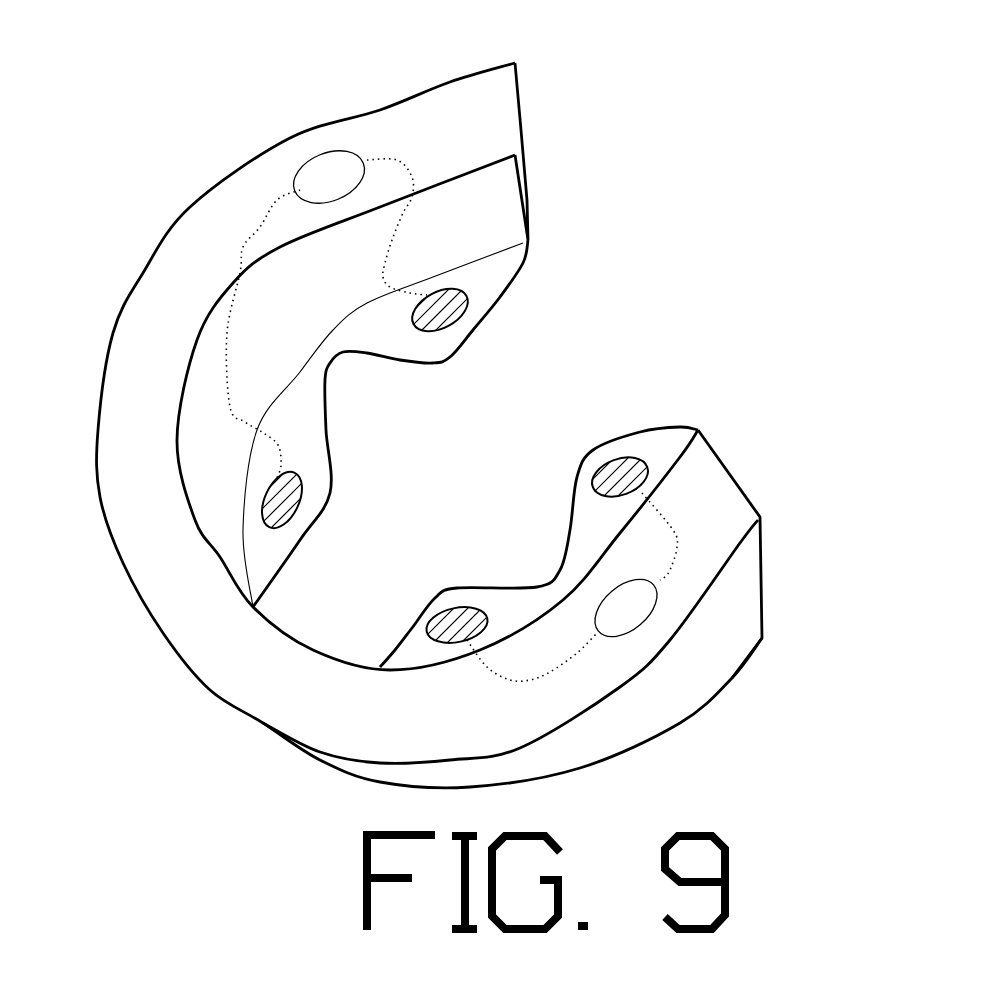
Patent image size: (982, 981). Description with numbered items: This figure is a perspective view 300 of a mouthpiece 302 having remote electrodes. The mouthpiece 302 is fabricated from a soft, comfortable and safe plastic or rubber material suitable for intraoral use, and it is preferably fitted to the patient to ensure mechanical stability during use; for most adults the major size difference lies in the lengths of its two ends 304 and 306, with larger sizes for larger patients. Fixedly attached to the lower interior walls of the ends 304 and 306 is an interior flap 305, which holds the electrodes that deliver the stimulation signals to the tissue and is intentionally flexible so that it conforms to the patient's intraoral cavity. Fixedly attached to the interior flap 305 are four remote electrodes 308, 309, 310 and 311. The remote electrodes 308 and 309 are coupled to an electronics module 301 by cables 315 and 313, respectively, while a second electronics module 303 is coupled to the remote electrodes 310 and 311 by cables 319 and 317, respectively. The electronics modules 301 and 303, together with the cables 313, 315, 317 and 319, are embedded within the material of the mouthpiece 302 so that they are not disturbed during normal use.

The perspective view 300 is at (474, 413).
The electronics module 301 is at (325, 172).
The mouthpiece 302 is at (143, 563).
The electronics module 303 is at (643, 607).
The end 304 is at (458, 110).
The interior flap 305 is at (500, 267).
The end 306 is at (692, 472).
The remote electrode 308 is at (463, 308).
The remote electrode 309 is at (302, 482).
The remote electrode 310 is at (638, 457).
The remote electrode 311 is at (453, 613).
The cable 313 is at (243, 250).
The cable 315 is at (387, 277).
The cable 317 is at (510, 680).
The cable 319 is at (677, 537).